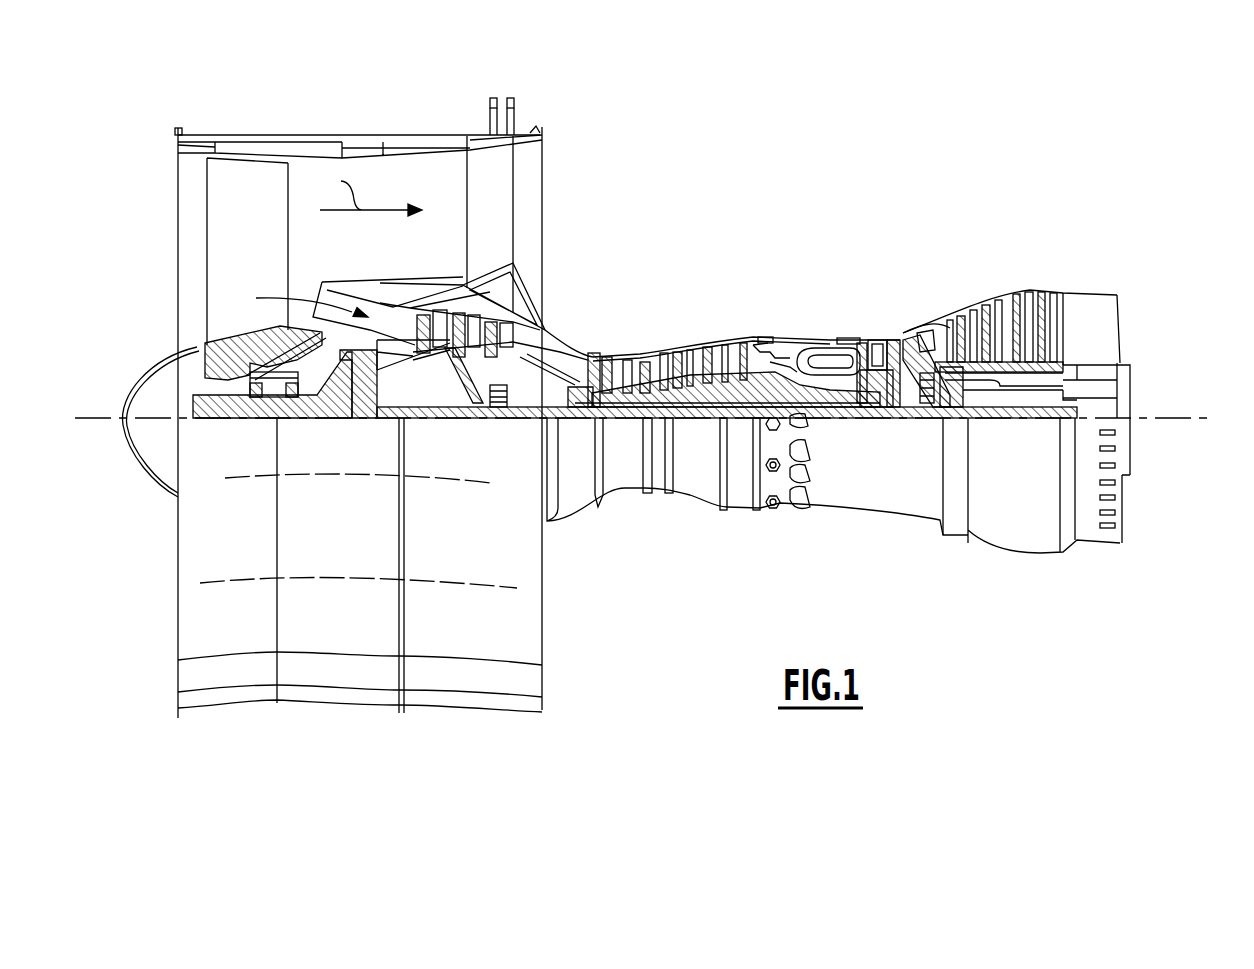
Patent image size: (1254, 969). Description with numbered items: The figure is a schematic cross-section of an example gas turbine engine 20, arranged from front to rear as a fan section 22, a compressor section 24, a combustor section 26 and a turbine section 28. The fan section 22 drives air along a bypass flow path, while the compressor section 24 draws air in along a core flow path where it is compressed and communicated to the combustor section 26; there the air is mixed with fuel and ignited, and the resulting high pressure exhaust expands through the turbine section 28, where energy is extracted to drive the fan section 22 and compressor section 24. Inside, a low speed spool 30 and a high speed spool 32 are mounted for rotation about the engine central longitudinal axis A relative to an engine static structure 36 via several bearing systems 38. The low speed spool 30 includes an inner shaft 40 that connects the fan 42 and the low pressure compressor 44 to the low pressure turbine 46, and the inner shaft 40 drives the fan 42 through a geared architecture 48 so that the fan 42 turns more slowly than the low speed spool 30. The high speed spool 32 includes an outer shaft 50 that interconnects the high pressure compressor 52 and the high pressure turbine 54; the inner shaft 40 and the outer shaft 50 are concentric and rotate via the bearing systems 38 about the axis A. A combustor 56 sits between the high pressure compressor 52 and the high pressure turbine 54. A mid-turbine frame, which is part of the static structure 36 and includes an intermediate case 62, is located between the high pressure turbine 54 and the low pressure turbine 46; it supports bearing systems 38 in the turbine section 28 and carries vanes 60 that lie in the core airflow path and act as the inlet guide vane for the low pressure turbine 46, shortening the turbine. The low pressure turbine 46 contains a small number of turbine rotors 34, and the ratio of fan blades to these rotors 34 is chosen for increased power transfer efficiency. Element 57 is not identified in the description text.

The gas turbine engine 20 is at (828, 178).
The fan section 22 is at (386, 108).
The compressor section 24 is at (398, 254).
The combustor section 26 is at (852, 254).
The turbine section 28 is at (1073, 254).
The low speed spool 30 is at (700, 438).
The high speed spool 32 is at (737, 383).
The turbine rotors 34 is at (1063, 392).
The engine static structure 36 is at (740, 518).
The bearing systems 38 is at (252, 410).
The inner shaft 40 is at (558, 425).
The fan 42 is at (263, 266).
The low pressure compressor section 44 is at (475, 320).
The low pressure turbine section 46 is at (1010, 317).
The geared architecture 48 is at (366, 400).
The outer shaft 50 is at (829, 413).
The high pressure compressor section 52 is at (673, 392).
The high pressure turbine section 54 is at (877, 337).
The combustor 56 is at (812, 360).
The mid-turbine frame 57 is at (925, 315).
The vanes 60 is at (950, 393).
The intermediate case 62 is at (912, 338).
The engine central longitudinal axis A is at (1216, 418).